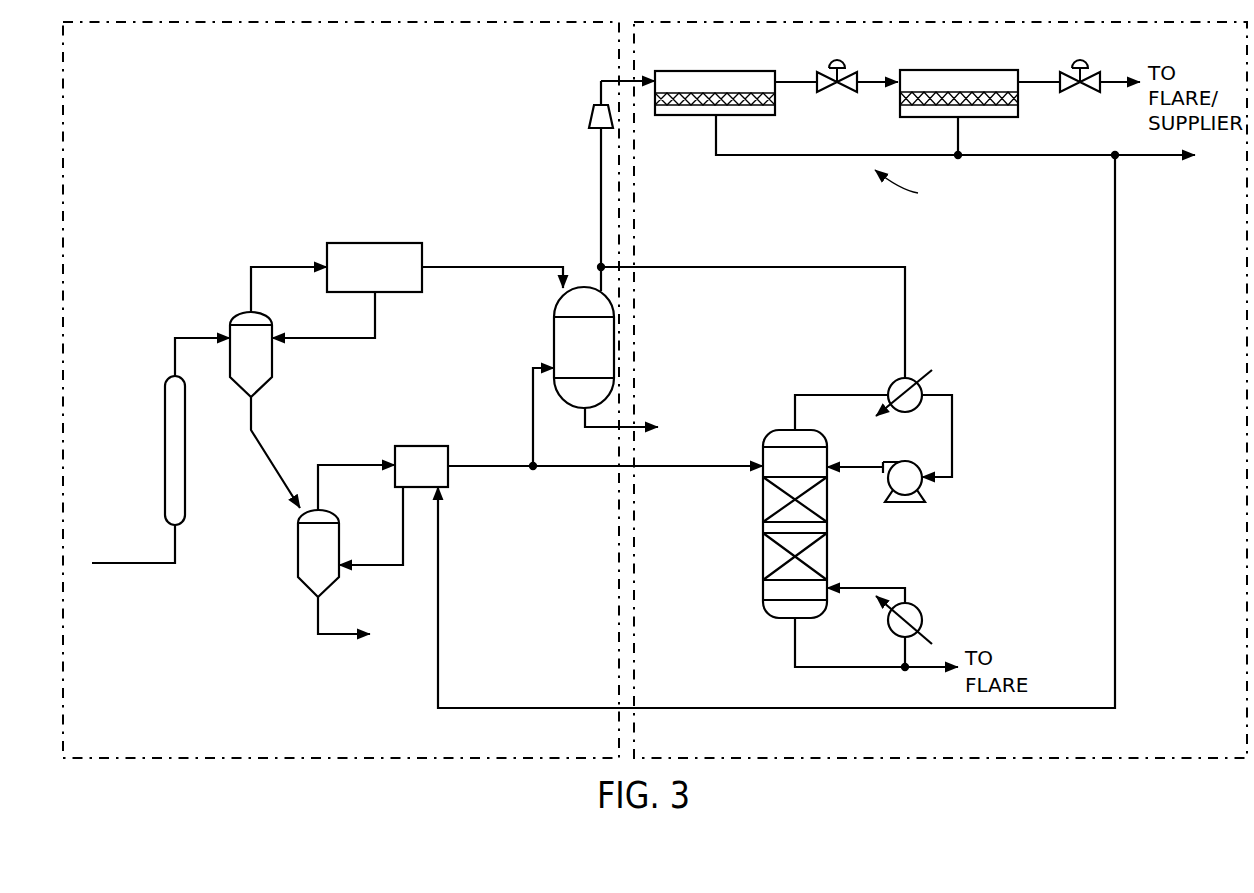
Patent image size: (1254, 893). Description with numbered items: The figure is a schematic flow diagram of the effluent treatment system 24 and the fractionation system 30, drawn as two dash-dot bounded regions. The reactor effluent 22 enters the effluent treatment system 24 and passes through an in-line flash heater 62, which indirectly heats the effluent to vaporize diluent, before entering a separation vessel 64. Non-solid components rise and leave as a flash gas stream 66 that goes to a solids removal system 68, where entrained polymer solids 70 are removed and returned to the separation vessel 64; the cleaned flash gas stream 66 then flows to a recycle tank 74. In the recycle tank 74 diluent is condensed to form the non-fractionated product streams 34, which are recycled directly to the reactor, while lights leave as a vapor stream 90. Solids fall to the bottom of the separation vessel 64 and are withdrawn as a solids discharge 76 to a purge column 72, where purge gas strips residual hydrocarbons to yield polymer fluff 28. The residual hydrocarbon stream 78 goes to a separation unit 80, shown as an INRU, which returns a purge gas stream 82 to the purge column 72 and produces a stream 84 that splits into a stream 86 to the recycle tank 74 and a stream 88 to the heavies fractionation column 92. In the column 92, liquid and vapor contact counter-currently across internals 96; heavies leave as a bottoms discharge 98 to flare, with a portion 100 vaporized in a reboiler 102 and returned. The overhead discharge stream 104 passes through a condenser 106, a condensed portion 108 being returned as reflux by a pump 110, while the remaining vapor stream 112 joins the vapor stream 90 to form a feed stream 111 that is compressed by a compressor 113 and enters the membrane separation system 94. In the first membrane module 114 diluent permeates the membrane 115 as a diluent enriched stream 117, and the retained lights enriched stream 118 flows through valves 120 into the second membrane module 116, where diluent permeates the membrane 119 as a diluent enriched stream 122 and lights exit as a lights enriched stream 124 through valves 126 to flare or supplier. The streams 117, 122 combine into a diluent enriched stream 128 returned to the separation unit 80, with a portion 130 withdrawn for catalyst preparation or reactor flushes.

The effluent 22 is at (105, 562).
The effluent treatment system 24 is at (346, 22).
The polymer fluff 28 is at (320, 620).
The fractionation system 30 is at (850, 22).
The non-fractionated product streams 34 is at (608, 430).
The in-line flash heater 62 is at (185, 462).
The separation vessel 64 is at (274, 372).
The flash gas stream 66 is at (252, 302).
The solids removal system 68 is at (383, 245).
The entrained polymer solids 70 is at (375, 330).
The purge column 72 is at (340, 537).
The recycle tank 74 is at (553, 336).
The solids discharge 76 is at (252, 420).
The residual hydrocarbon stream 78 is at (325, 465).
The separation unit 80 is at (415, 446).
The purge gas stream 82 is at (385, 567).
The stream containing residual hydrocarbons 84 is at (479, 470).
The stream to recycle tank 86 is at (532, 410).
The stream to heavies fractionation column 88 is at (705, 466).
The vapor stream 90 is at (596, 281).
The heavies fractionation column 92 is at (767, 436).
The membrane separation system 94 is at (911, 186).
The internals 96 is at (762, 530).
The bottoms discharge 98 is at (793, 644).
The portion of bottoms discharge 100 is at (893, 587).
The reboiler 102 is at (922, 608).
The overhead discharge stream 104 is at (793, 405).
The condenser 106 is at (893, 382).
The condensed portion 108 is at (955, 447).
The pump 110 is at (915, 503).
The feed stream 111 is at (600, 194).
The vapor stream 112 is at (818, 267).
The compressor 113 is at (590, 113).
The first membrane module 114 is at (672, 72).
The hydrocarbon absorption membrane 115 is at (728, 106).
The second membrane module 116 is at (918, 70).
The diluent enriched stream 117 is at (745, 155).
The lights enriched stream 118 is at (790, 82).
The hydrocarbon absorption membrane 119 is at (925, 105).
The valves 120 is at (822, 92).
The diluent enriched stream 122 is at (960, 142).
The lights enriched stream 124 is at (1040, 80).
The valves 126 is at (1061, 90).
The diluent enriched stream 128 is at (1117, 262).
The portion of diluent enriched stream 130 is at (1132, 155).